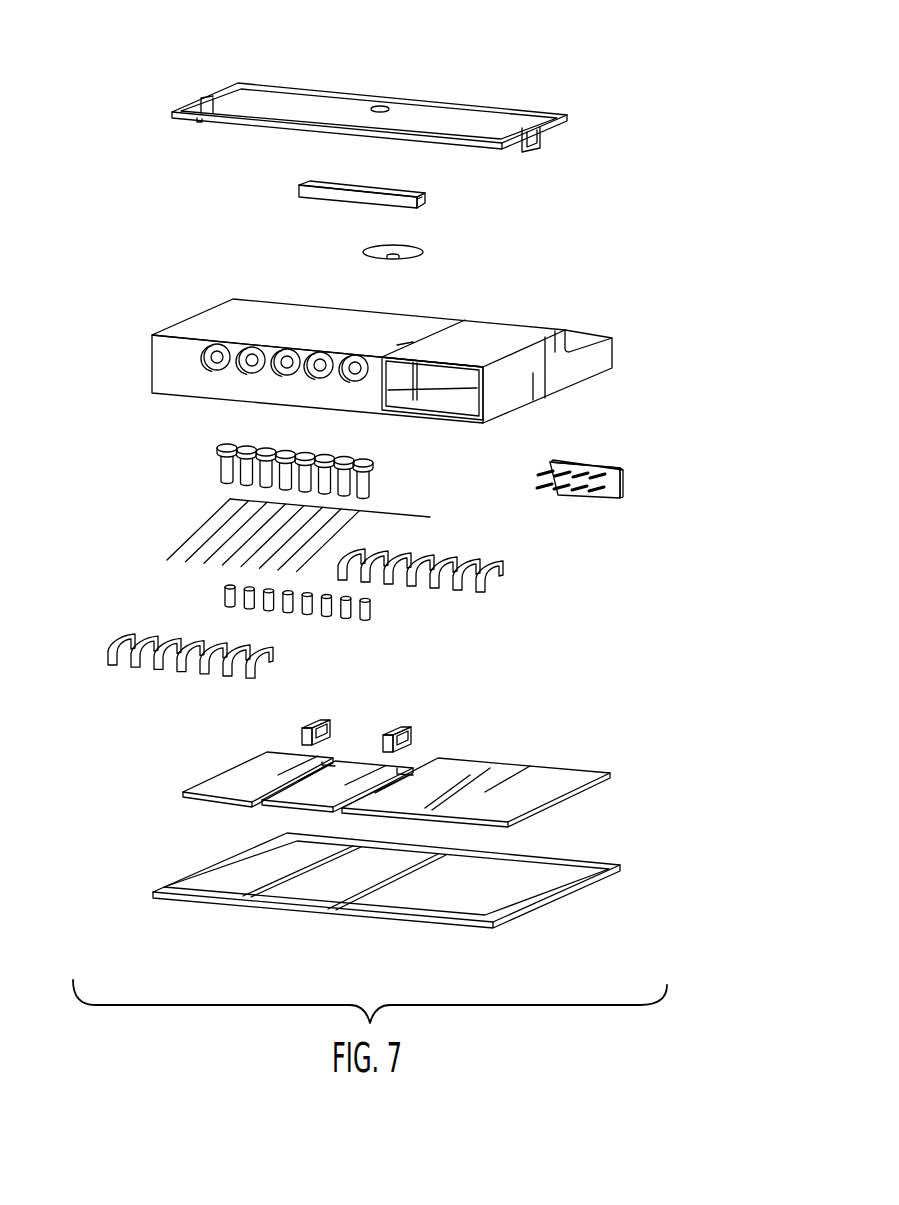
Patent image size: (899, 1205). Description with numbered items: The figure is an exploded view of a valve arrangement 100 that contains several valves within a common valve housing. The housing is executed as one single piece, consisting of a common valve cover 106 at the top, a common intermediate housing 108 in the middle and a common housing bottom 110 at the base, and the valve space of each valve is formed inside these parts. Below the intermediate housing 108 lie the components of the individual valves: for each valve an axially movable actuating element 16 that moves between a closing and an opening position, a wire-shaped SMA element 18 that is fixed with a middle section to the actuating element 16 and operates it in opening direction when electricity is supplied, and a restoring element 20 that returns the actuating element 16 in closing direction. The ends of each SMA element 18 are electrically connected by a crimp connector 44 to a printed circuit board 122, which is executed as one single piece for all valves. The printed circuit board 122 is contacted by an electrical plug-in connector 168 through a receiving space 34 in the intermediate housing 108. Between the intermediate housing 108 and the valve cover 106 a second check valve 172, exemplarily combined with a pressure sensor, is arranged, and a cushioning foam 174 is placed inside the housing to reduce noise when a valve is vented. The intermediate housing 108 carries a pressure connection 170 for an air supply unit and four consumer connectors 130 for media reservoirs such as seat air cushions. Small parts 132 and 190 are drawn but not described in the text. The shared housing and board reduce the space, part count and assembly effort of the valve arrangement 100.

The valve arrangement 100 is at (180, 86).
The valve cover 106 is at (470, 122).
The aperture 132 is at (377, 107).
The cushioning foam 174 is at (423, 197).
The second check valve 172 is at (420, 252).
The consumer connectors 130 is at (307, 355).
The intermediate housing 108 is at (543, 387).
The pressure connection 170 is at (353, 381).
The receiving space 34 is at (457, 400).
The actuating element 16 is at (206, 470).
The SMA element 18 is at (168, 540).
The restoring element 20 is at (389, 605).
The crimp connector 44 is at (96, 647).
The electrical plug-in connector 168 is at (623, 482).
The clips 190 is at (387, 733).
The printed circuit board 122 is at (560, 783).
The housing bottom 110 is at (532, 885).